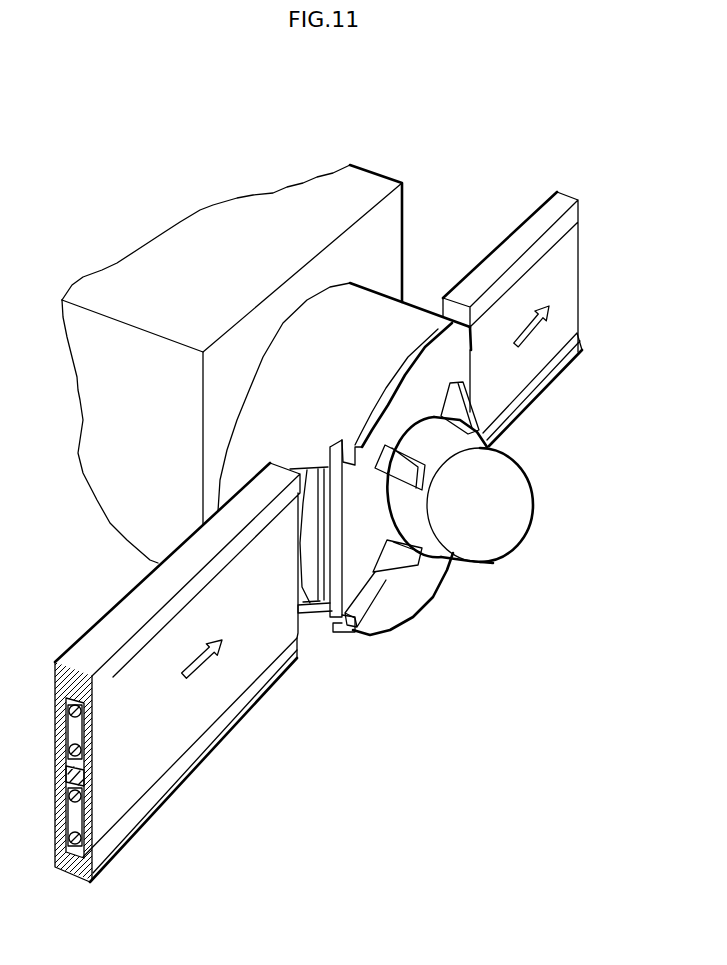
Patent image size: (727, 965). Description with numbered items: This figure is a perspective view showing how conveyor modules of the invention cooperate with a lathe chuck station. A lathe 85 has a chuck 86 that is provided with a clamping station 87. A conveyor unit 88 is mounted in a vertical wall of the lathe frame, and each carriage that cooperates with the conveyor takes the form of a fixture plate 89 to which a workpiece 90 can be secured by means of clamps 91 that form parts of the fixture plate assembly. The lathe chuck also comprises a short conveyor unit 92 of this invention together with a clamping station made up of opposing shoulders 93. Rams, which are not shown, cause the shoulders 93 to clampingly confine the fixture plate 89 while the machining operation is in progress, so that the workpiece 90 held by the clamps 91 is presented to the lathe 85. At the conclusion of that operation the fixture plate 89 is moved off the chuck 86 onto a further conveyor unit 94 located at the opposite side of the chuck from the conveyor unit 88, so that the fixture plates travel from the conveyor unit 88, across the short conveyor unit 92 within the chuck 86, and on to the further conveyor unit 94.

The lathe 85 is at (209, 291).
The chuck 86 is at (392, 310).
The clamping station 87 is at (337, 632).
The conveyor unit 88 is at (221, 745).
The fixture plate 89 is at (323, 622).
The workpiece 90 is at (473, 535).
The clamps 91 is at (393, 553).
The short conveyor unit 92 is at (355, 524).
The opposing shoulders 93 is at (355, 453).
The further conveyor unit 94 is at (584, 289).